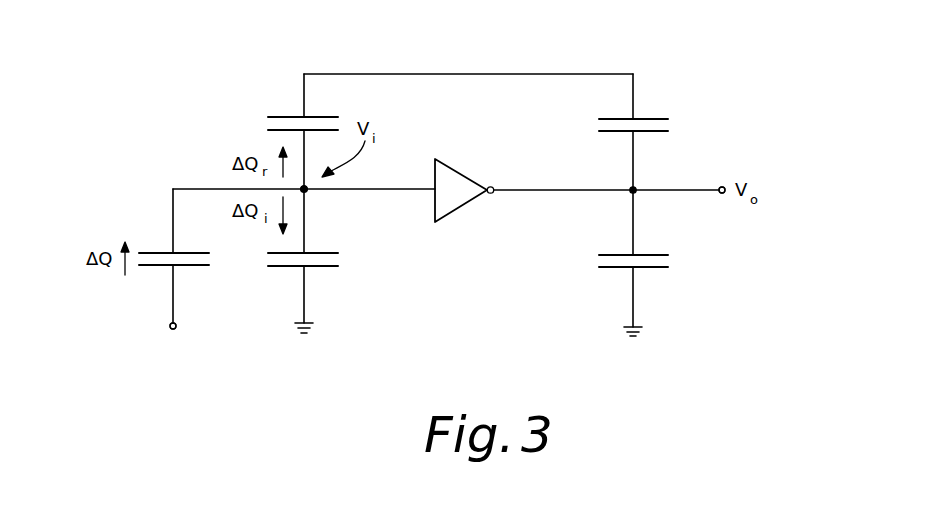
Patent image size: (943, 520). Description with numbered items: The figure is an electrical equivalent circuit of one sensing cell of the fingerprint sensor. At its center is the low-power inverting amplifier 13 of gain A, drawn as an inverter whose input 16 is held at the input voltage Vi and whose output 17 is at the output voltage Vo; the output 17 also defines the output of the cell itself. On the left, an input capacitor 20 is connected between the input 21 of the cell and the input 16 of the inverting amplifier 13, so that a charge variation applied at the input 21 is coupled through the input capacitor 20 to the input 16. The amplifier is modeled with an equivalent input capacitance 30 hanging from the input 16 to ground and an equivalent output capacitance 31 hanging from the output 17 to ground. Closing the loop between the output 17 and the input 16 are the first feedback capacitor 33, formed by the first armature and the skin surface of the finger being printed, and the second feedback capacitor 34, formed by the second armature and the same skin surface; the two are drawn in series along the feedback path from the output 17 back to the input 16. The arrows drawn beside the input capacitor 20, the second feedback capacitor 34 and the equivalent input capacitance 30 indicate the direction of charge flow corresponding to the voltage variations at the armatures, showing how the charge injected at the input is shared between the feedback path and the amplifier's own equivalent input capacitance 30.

The inverting amplifier 13 is at (457, 183).
The input 16 is at (306, 191).
The output 17 is at (680, 193).
The input capacitor 20 is at (204, 257).
The input 21 is at (172, 331).
The equivalent input capacitance 30 is at (338, 259).
The equivalent output capacitance 31 is at (660, 259).
The first feedback capacitor 33 is at (663, 124).
The second feedback capacitor 34 is at (268, 119).